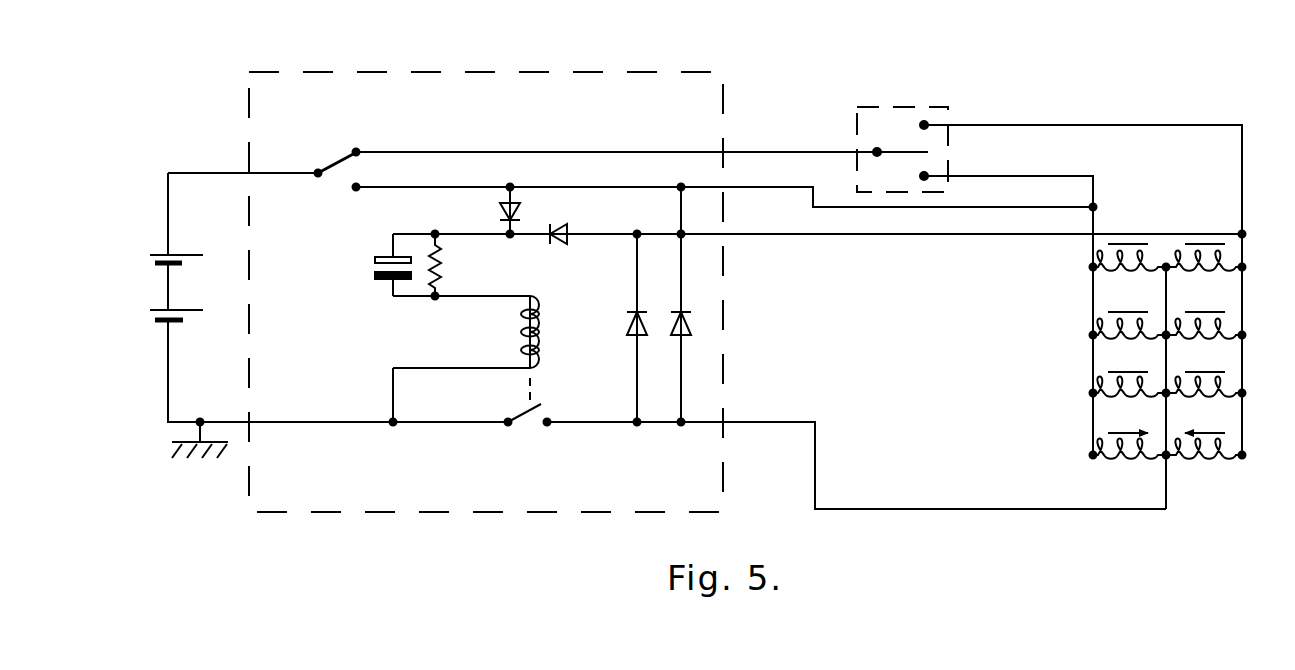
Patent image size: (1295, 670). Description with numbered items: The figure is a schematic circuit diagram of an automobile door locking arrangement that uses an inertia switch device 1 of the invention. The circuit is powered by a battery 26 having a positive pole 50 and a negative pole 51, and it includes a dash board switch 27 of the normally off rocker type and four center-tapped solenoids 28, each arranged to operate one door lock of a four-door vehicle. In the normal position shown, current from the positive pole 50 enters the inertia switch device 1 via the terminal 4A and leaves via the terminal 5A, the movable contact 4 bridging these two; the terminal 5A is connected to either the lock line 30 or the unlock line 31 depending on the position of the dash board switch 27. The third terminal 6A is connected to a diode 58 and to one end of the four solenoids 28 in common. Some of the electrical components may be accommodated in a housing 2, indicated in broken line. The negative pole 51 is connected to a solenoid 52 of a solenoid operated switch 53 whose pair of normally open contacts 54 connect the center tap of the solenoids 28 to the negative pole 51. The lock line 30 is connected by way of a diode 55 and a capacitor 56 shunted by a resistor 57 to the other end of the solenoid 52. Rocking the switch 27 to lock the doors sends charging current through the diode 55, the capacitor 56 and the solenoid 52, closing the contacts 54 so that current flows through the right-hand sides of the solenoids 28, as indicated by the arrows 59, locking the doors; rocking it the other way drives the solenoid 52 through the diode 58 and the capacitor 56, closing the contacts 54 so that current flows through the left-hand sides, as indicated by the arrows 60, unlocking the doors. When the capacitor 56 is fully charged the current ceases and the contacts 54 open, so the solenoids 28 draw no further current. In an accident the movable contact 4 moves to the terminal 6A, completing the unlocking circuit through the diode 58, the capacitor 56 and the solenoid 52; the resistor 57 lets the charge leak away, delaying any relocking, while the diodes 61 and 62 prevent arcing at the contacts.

The inertia switch device 1 is at (347, 181).
The housing 2 is at (493, 70).
The movable contact 4 is at (343, 160).
The terminal 4A is at (317, 177).
The terminal 5A is at (360, 149).
The third terminal 6A is at (355, 191).
The battery 26 is at (183, 290).
The dash board switch 27 is at (903, 103).
The center-tapped solenoids 28 is at (1090, 267).
The lock line 30 is at (1020, 125).
The unlock line 31 is at (1022, 177).
The positive pole 50 is at (181, 238).
The negative pole 51 is at (178, 325).
The solenoid 52 is at (543, 324).
The solenoid operated switch 53 is at (511, 403).
The normally open contacts 54 is at (528, 418).
The diode 55 is at (562, 248).
The capacitor 56 is at (374, 276).
The resistor 57 is at (440, 272).
The diode 58 is at (498, 212).
The arrows 59 is at (1210, 244).
The arrows 60 is at (1125, 244).
The diode 61 is at (626, 334).
The diode 62 is at (693, 333).